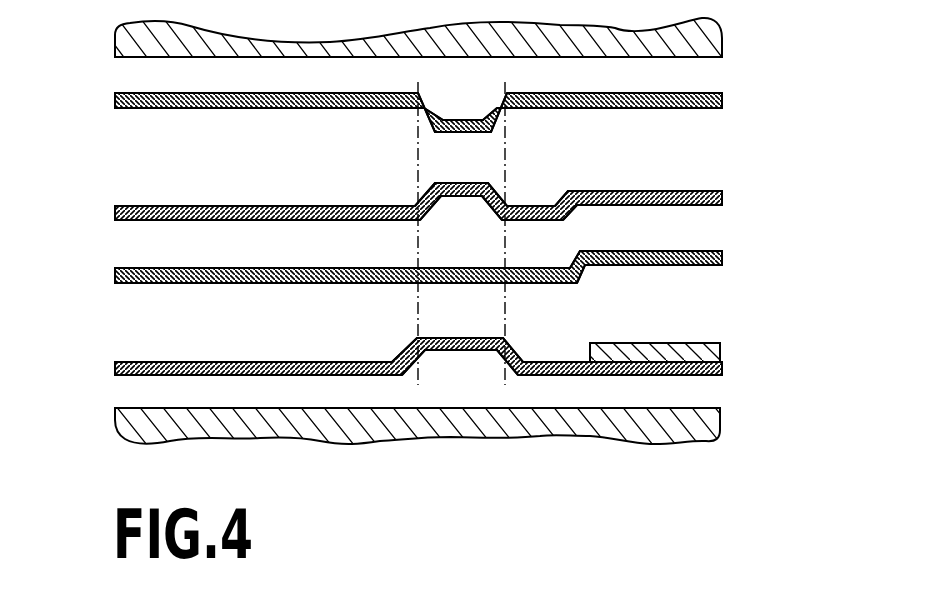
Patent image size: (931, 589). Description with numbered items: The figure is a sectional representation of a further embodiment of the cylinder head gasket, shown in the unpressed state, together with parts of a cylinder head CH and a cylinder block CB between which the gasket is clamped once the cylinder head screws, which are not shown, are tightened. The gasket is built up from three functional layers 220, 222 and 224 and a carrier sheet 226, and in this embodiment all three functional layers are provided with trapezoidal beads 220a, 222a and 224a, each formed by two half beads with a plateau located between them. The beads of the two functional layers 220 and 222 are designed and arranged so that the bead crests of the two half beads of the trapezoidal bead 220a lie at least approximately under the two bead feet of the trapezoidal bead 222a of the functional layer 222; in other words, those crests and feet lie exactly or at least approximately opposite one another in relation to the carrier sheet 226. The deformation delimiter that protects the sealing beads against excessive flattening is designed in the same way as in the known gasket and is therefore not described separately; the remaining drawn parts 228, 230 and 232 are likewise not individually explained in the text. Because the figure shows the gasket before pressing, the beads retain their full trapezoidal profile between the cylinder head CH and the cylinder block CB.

The cylinder head CH is at (720, 68).
The cylinder block CB is at (719, 406).
The functional layer 220 is at (168, 375).
The trapezoidal bead 220a is at (538, 341).
The functional layer 222 is at (168, 220).
The trapezoidal bead 222a is at (516, 173).
The functional layer 224 is at (168, 108).
The trapezoidal bead 224a is at (516, 123).
The carrier sheet 226 is at (168, 283).
The pad block on layer 220 228 is at (720, 352).
The stepped portion of layer 226 230 is at (583, 268).
The stepped portion of layer 222 232 is at (574, 207).